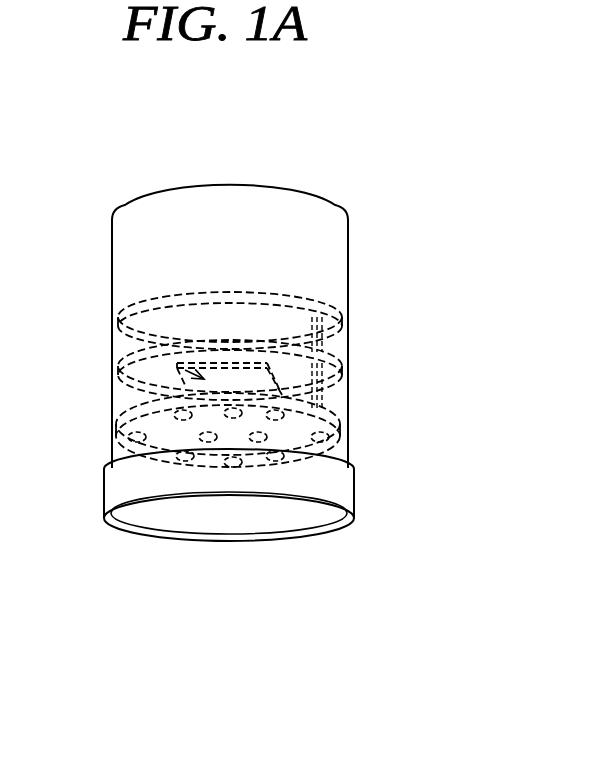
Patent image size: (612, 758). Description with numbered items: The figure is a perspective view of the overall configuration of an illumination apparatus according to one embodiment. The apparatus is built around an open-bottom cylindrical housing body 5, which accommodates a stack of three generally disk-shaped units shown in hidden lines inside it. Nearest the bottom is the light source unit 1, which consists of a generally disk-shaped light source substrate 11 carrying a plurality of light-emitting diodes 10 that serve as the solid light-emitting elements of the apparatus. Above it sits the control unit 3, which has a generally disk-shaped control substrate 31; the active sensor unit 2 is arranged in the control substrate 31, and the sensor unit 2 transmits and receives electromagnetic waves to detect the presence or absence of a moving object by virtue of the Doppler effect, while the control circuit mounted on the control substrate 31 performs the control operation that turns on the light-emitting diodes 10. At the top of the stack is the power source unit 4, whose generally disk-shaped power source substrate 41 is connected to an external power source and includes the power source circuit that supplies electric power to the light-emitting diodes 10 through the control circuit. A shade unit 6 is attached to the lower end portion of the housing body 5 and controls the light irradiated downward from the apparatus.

The light source unit 1 is at (293, 428).
The light-emitting diodes 10 is at (137, 441).
The light source substrate 11 is at (130, 417).
The active sensor unit 2 is at (140, 354).
The control unit 3 is at (287, 376).
The control substrate 31 is at (138, 383).
The power source unit 4 is at (278, 324).
The power source substrate 41 is at (182, 322).
The housing body 5 is at (333, 197).
The shade unit 6 is at (357, 490).